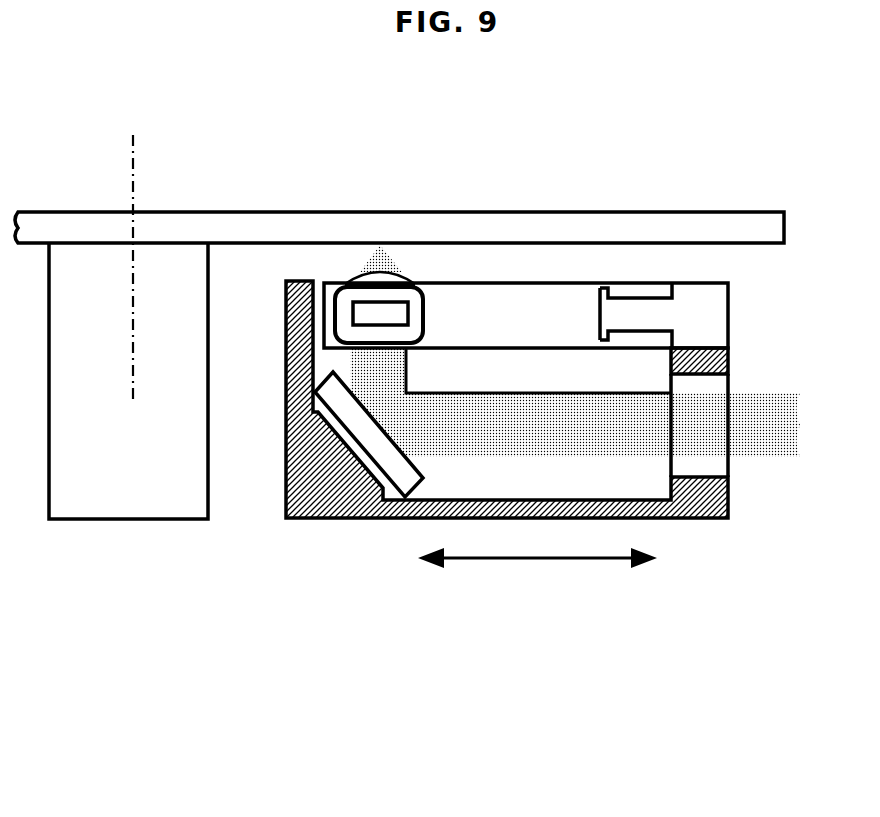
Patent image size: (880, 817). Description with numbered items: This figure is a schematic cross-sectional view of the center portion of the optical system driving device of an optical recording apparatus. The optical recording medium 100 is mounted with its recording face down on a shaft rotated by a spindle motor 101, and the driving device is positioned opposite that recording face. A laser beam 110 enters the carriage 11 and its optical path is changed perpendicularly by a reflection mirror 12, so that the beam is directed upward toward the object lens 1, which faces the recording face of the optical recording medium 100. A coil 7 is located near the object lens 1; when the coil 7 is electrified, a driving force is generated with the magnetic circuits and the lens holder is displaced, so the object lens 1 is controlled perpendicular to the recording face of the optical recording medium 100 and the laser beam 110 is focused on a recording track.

The object lens 1 is at (367, 264).
The coil 7 is at (357, 307).
The carriage 11 is at (317, 494).
The reflection mirror 12 is at (372, 432).
The optical recording medium 100 is at (458, 228).
The spindle motor 101 is at (108, 444).
The laser beam 110 is at (757, 433).